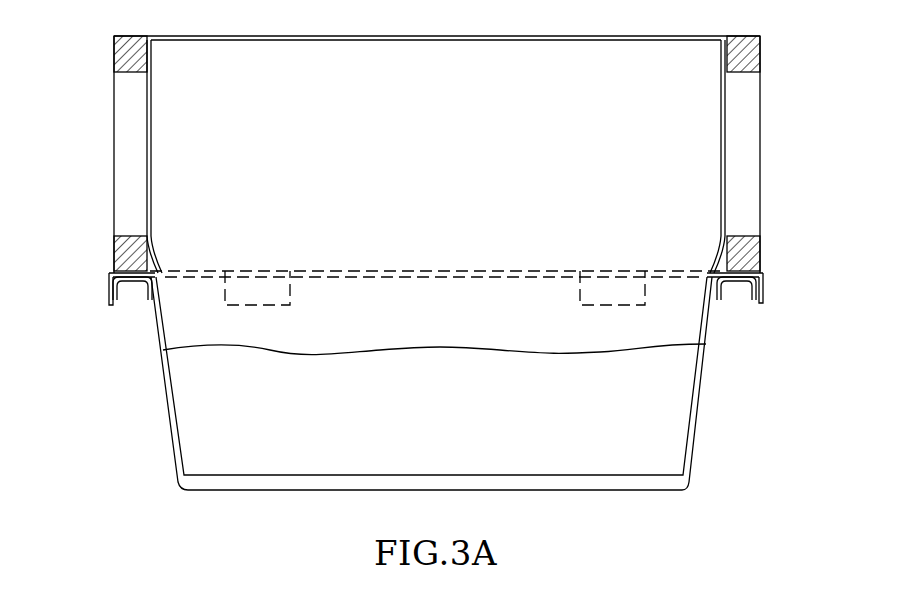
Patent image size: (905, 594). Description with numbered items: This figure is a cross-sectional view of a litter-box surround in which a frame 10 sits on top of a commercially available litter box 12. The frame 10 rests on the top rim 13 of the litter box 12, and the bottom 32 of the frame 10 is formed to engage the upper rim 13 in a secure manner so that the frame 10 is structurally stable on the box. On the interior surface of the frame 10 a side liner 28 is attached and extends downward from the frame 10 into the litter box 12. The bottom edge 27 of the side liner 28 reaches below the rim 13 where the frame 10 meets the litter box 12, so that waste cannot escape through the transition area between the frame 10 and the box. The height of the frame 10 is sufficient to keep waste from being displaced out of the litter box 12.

The frame 10 is at (786, 144).
The litter box 12 is at (718, 452).
The top rim 13 is at (137, 290).
The bottom edge 27 is at (612, 350).
The side liner 28 is at (712, 327).
The bottom 32 is at (760, 289).